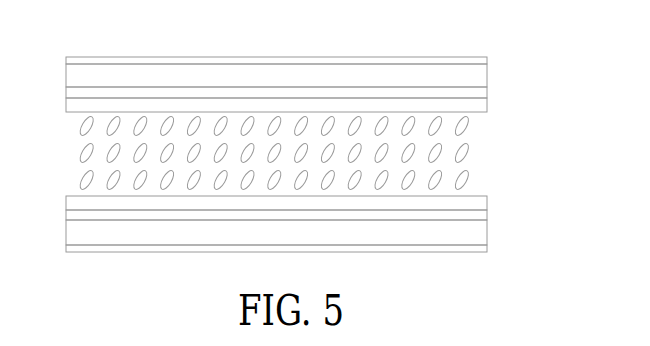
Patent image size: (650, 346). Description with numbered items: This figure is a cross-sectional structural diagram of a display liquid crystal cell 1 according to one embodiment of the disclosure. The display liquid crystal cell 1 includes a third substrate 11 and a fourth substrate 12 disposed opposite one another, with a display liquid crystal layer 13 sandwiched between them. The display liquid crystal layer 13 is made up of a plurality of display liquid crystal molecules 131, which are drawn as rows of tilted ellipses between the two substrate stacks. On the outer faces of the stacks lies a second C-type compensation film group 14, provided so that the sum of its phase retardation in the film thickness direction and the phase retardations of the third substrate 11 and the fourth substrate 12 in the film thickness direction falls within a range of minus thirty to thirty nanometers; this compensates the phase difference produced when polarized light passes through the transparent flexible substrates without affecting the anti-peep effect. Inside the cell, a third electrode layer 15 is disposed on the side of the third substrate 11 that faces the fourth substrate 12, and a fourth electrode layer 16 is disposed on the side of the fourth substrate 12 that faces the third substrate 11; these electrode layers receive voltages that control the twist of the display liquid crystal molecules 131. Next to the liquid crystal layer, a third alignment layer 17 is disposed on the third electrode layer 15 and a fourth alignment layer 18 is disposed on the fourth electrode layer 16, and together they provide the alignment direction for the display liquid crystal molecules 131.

The display liquid crystal cell 1 is at (292, 128).
The third substrate 11 is at (487, 76).
The fourth substrate 12 is at (487, 235).
The display liquid crystal layer 13 is at (279, 153).
The display liquid crystal molecules 131 is at (459, 153).
The second C-type compensation film group 14 is at (487, 57).
The third electrode layer 15 is at (487, 92).
The fourth electrode layer 16 is at (487, 214).
The third alignment layer 17 is at (487, 105).
The fourth alignment layer 18 is at (487, 200).